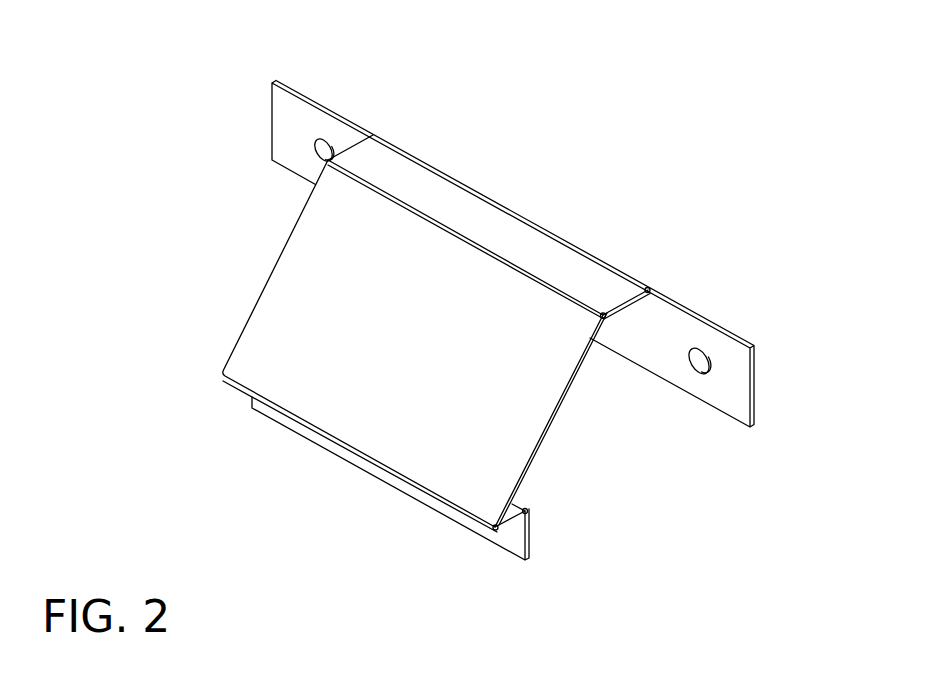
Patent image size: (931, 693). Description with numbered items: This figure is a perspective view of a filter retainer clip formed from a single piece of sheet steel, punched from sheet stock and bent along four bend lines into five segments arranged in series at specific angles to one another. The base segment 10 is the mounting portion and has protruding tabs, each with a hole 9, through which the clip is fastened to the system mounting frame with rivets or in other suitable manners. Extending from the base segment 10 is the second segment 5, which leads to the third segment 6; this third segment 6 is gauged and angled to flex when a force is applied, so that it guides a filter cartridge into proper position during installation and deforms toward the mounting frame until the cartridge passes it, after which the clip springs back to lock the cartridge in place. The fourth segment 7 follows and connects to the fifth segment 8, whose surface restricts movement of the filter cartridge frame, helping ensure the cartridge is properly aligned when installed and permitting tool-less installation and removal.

The second segment 5 is at (460, 213).
The third segment 6 is at (345, 322).
The fourth segment 7 is at (507, 517).
The fifth segment 8 is at (515, 542).
The hole 9 is at (697, 349).
The base segment 10 is at (650, 337).